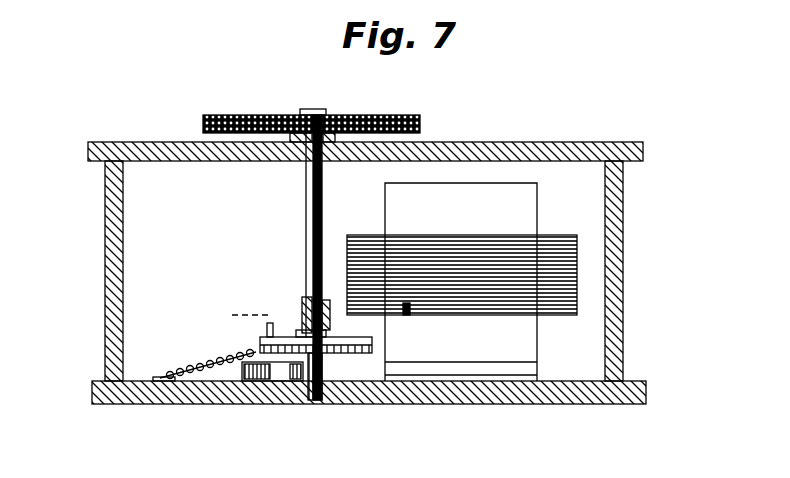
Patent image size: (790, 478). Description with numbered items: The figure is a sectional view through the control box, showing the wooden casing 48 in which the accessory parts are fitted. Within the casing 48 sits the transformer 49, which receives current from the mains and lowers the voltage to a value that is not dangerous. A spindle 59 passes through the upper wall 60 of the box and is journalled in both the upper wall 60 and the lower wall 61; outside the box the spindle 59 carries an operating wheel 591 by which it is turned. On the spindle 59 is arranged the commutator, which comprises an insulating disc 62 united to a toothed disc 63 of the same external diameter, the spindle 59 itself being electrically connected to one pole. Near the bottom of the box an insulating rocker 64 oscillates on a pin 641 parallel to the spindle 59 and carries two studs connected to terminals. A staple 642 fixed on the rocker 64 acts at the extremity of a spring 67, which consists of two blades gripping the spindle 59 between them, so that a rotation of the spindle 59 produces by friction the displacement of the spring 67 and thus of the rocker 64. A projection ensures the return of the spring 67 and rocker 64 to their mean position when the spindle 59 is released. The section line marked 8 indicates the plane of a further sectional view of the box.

The casing 48 is at (588, 325).
The transformer 49 is at (523, 243).
The spindle 59 is at (313, 184).
The operating wheel 591 is at (225, 115).
The upper wall 60 is at (490, 143).
The lower wall 61 is at (445, 404).
The insulating disc 62 is at (292, 333).
The toothed disc 63 is at (366, 352).
The insulating rocker 64 is at (250, 381).
The pin 641 is at (287, 382).
The staple 642 is at (267, 326).
The spring 67 is at (303, 306).
The section line 8 is at (230, 315).